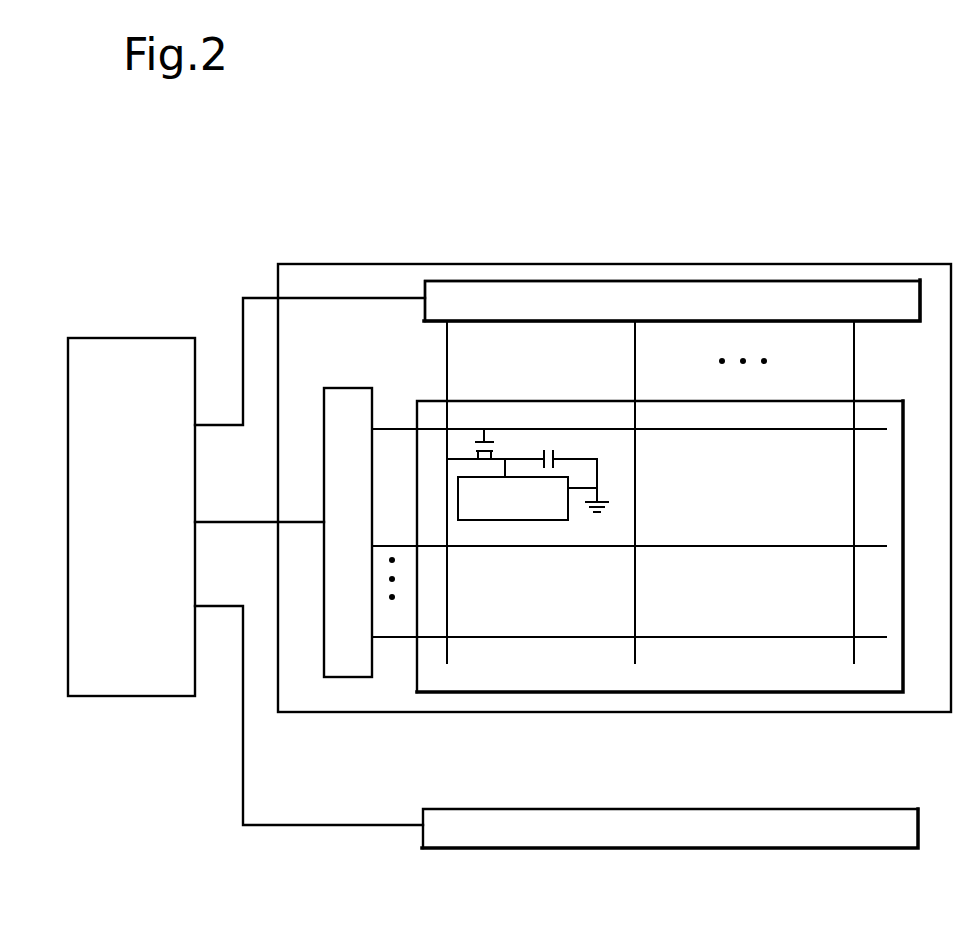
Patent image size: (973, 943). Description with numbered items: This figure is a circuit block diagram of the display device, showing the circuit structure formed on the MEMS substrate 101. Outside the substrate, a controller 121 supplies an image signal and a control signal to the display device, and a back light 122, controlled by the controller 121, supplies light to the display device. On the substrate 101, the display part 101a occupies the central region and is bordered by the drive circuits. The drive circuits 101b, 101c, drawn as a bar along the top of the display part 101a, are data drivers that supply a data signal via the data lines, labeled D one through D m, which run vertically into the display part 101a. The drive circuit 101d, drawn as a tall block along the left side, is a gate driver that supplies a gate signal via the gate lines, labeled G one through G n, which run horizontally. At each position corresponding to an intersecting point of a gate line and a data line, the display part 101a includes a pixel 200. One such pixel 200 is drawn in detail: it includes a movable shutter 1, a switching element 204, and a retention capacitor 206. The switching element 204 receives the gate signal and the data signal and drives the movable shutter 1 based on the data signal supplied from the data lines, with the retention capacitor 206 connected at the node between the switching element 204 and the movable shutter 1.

The movable shutter 1 is at (508, 521).
The MEMS substrate 101 is at (924, 265).
The display part 101a is at (835, 693).
The drive circuit 101b is at (724, 281).
The drive circuit 101c is at (672, 301).
The drive circuit 101d is at (353, 388).
The controller 121 is at (130, 697).
The back light 122 is at (705, 809).
The pixel 200 is at (527, 476).
The switching element 204 is at (493, 452).
The retention capacitor 206 is at (550, 452).